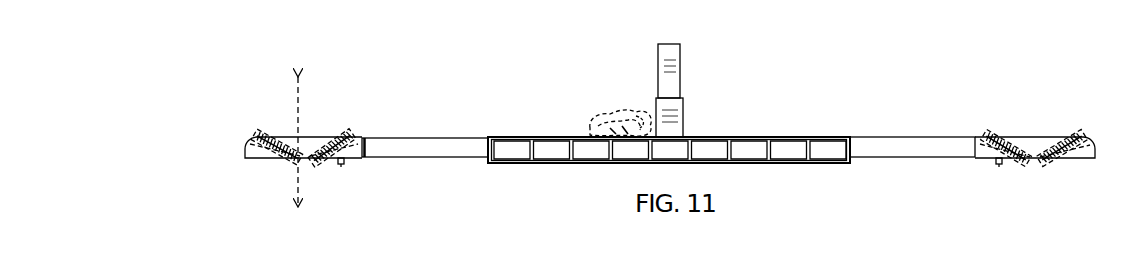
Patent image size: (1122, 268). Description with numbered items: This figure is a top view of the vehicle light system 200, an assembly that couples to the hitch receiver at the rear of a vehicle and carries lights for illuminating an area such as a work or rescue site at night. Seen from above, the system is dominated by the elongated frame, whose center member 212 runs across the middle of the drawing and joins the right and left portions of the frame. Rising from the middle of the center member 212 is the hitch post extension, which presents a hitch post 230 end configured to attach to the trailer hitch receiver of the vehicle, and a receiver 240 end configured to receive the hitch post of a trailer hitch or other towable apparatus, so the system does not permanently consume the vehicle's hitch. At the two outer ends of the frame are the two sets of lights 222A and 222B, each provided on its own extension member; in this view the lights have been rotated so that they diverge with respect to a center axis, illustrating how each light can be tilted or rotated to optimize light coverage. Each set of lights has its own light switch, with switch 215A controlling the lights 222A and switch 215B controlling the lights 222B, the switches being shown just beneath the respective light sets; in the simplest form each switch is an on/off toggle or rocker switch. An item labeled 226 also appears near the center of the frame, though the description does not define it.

The vehicle light system 200 is at (853, 66).
The center member 212 is at (888, 157).
The set of lights 222A is at (1008, 130).
The set of lights 222B is at (340, 130).
The light switch 215A is at (1000, 172).
The light switch 215B is at (343, 176).
The debris 226 is at (612, 110).
The hitch post 230 is at (680, 65).
The receiver 240 is at (683, 115).